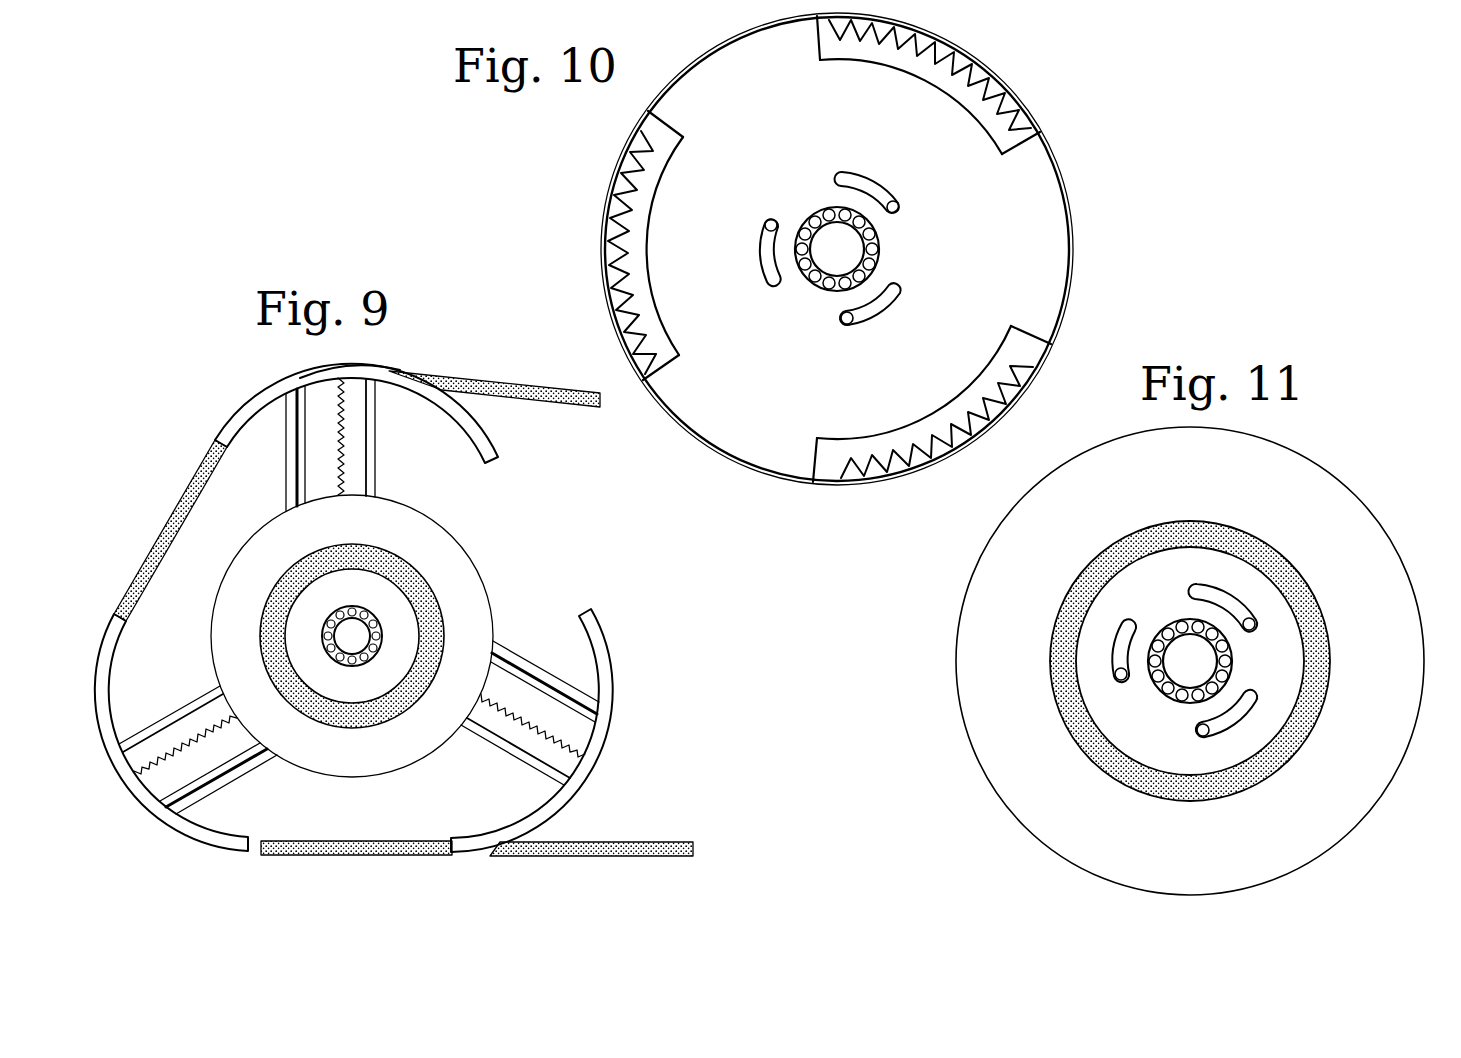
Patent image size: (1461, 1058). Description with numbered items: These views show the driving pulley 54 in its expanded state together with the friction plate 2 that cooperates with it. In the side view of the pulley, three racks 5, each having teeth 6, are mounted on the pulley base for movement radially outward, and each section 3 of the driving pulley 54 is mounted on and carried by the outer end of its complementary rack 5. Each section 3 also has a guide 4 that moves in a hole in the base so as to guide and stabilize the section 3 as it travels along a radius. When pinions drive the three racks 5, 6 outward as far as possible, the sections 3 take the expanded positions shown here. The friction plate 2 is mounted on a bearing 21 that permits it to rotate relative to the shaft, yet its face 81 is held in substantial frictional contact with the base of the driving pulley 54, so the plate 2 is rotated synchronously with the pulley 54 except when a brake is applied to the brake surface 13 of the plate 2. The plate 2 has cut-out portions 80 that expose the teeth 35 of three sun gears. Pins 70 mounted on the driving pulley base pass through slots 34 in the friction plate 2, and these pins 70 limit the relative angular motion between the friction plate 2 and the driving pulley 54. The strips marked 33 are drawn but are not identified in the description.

In FIG. 9, the friction plate 2 is at (476, 594).
In FIG. 11, the friction plate 2 is at (1300, 472).
In FIG. 9, the section 3 is at (263, 398).
In FIG. 9, the guide 4 is at (285, 453).
In FIG. 9, the rack 5 is at (376, 458).
In FIG. 9, the teeth 6 is at (340, 420).
In FIG. 9, the brake surface 13 is at (372, 550).
In FIG. 11, the brake surface 13 is at (1150, 528).
In FIG. 9, the bearing 21 is at (374, 655).
In FIG. 10, the bearing 21 is at (820, 218).
In FIG. 11, the bearing 21 is at (1230, 672).
In FIG. 9, the belt strip 33 is at (478, 378).
In FIG. 10, the slot 34 is at (856, 172).
In FIG. 11, the slot 34 is at (1110, 630).
In FIG. 10, the teeth of sun gears 35 is at (985, 85).
In FIG. 9, the driving pulley 54 is at (388, 366).
In FIG. 10, the pin 70 is at (898, 200).
In FIG. 11, the pin 70 is at (1253, 627).
In FIG. 10, the cut-out portion 80 is at (1045, 150).
In FIG. 10, the face 81 is at (748, 432).